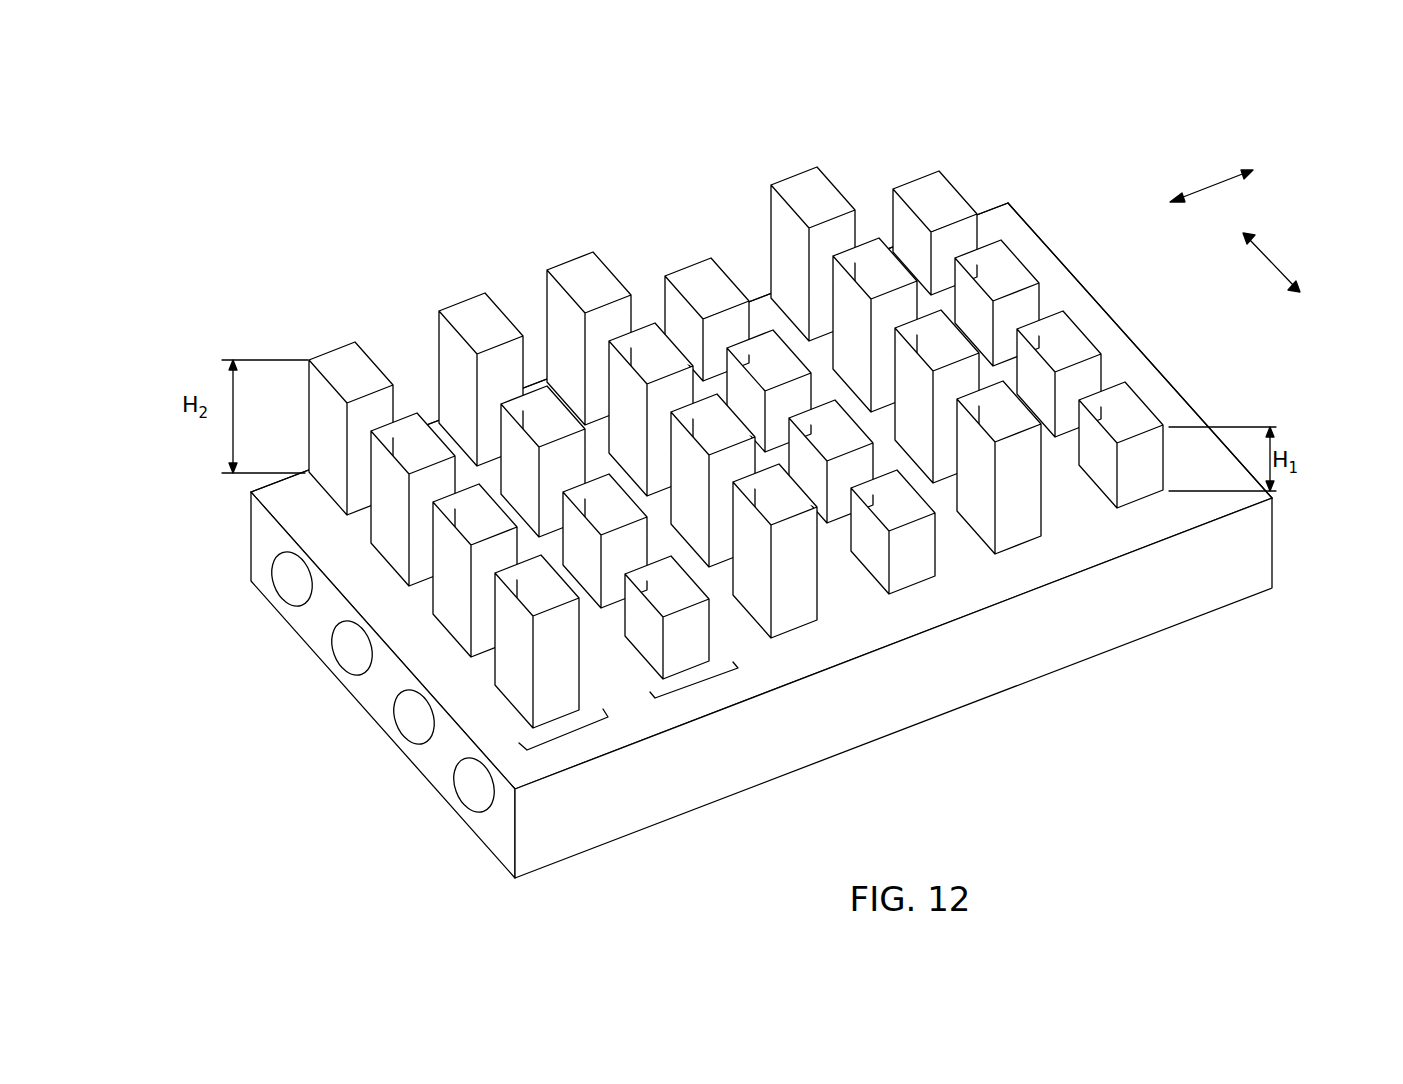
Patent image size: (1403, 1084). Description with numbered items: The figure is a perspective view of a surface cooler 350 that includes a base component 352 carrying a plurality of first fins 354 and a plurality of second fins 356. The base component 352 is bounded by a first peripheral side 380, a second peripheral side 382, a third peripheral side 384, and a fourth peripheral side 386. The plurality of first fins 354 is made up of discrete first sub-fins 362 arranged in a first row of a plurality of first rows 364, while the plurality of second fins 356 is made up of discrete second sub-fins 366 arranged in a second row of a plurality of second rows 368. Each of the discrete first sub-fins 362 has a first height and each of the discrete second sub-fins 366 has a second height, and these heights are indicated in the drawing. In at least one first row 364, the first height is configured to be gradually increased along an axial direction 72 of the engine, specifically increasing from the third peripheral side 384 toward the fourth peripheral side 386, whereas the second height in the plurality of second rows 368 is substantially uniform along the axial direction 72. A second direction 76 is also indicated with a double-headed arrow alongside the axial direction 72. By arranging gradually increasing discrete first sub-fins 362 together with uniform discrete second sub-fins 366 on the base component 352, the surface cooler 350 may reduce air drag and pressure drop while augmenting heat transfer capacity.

The surface cooler 350 is at (744, 508).
The base component 352 is at (766, 514).
The plurality of first fins 354 is at (912, 243).
The plurality of second fins 356 is at (557, 306).
The discrete first sub-fins 362 is at (590, 572).
The first row 364 is at (698, 685).
The discrete second sub-fins 366 is at (394, 531).
The second row 368 is at (570, 732).
The first peripheral side 380 is at (258, 538).
The second peripheral side 382 is at (1140, 350).
The third peripheral side 384 is at (915, 690).
The fourth peripheral side 386 is at (993, 210).
The first direction 76 is at (1210, 177).
The axial direction 72 is at (1276, 258).